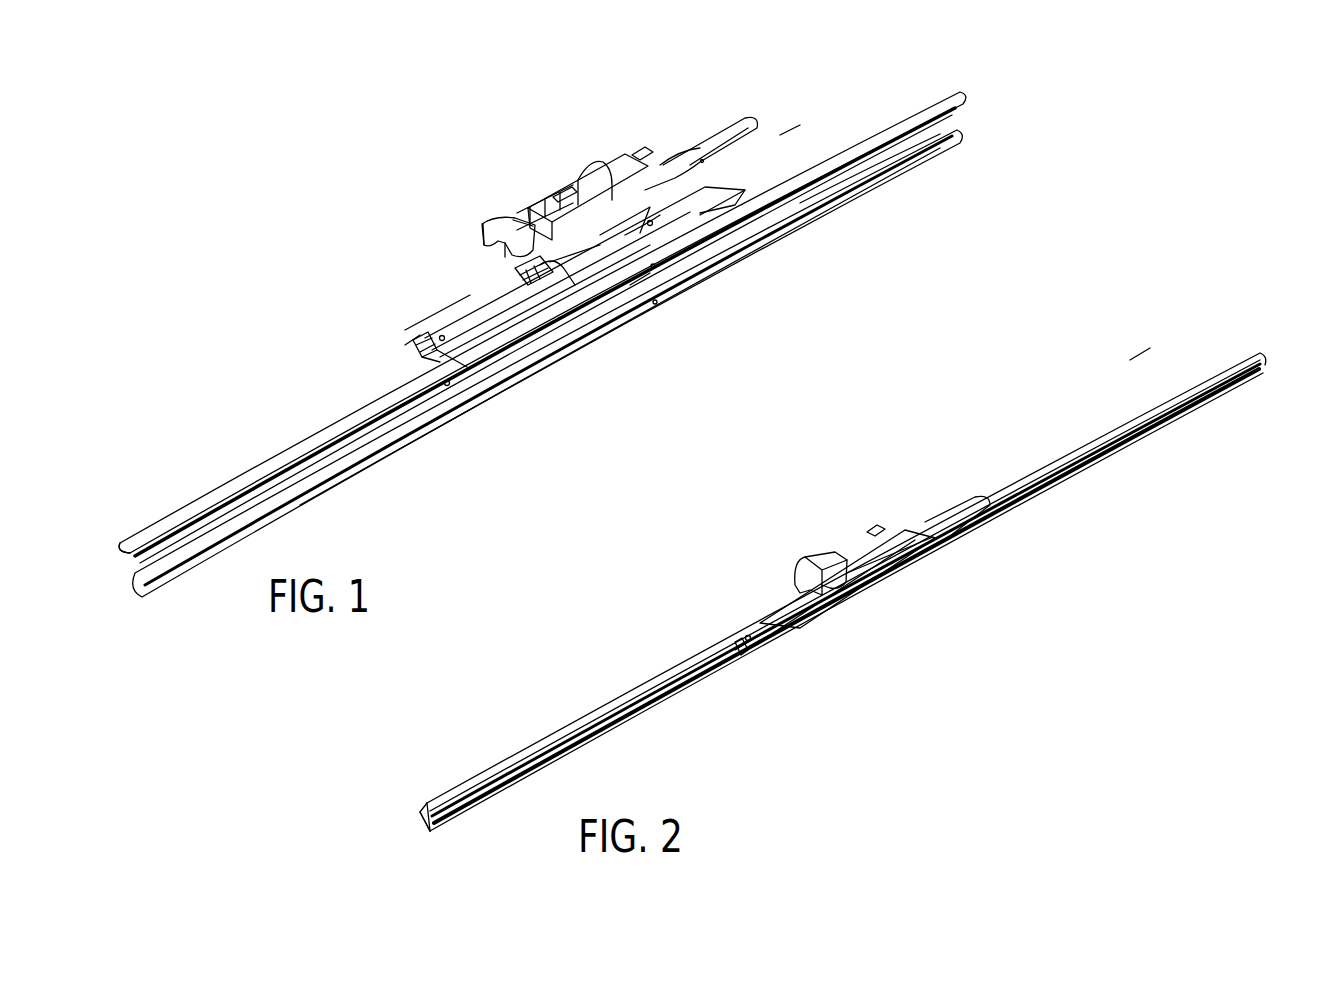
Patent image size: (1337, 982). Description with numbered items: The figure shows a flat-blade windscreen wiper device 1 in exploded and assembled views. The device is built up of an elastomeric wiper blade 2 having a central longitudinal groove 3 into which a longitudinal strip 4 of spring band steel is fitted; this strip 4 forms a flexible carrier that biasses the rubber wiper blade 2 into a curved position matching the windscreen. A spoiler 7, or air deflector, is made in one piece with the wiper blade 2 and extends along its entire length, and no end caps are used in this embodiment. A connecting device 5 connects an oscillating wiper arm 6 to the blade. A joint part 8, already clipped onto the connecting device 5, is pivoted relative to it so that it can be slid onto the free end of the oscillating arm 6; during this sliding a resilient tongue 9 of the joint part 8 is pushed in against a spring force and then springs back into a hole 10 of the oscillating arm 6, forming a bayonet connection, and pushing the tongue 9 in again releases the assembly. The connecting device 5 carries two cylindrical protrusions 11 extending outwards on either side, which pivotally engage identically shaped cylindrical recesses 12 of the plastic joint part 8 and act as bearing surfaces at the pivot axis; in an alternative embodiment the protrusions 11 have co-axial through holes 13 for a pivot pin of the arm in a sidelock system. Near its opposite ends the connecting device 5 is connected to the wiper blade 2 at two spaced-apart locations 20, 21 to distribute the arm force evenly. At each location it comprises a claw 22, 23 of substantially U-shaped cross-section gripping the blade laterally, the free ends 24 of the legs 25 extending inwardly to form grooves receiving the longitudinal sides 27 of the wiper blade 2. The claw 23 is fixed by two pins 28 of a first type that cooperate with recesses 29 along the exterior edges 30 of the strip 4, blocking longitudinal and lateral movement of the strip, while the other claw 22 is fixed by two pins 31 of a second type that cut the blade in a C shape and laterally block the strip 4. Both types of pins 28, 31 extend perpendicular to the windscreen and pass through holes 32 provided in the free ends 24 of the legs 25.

In FIG. 1, the windscreen wiper device 1 is at (810, 112).
In FIG. 2, the windscreen wiper device 1 is at (1155, 325).
In FIG. 1, the wiper blade 2 is at (327, 462).
In FIG. 2, the wiper blade 2 is at (590, 738).
In FIG. 1, the longitudinal groove 3 is at (125, 552).
In FIG. 1, the longitudinal strip 4 is at (480, 393).
In FIG. 2, the longitudinal strip 4 is at (412, 815).
In FIG. 1, the connecting device 5 is at (487, 302).
In FIG. 2, the connecting device 5 is at (773, 623).
In FIG. 1, the oscillating wiper arm 6 is at (730, 130).
In FIG. 2, the oscillating wiper arm 6 is at (972, 498).
In FIG. 1, the spoiler 7 is at (208, 497).
In FIG. 2, the spoiler 7 is at (495, 765).
In FIG. 1, the joint part 8 is at (500, 222).
In FIG. 2, the joint part 8 is at (813, 557).
In FIG. 1, the resilient tongue 9 is at (560, 188).
In FIG. 2, the resilient tongue 9 is at (878, 527).
In FIG. 1, the hole 10 is at (638, 147).
In FIG. 1, the cylindrical protrusions 11 is at (545, 272).
In FIG. 1, the cylindrical recesses 12 is at (620, 200).
In FIG. 1, the co-axial through holes 13 is at (545, 272).
In FIG. 1, the location 20 is at (390, 312).
In FIG. 2, the location 20 is at (713, 597).
In FIG. 1, the location 21 is at (655, 197).
In FIG. 1, the claw 22 is at (375, 347).
In FIG. 2, the claw 22 is at (790, 645).
In FIG. 1, the claw 23 is at (688, 216).
In FIG. 1, the free ends 24 is at (427, 357).
In FIG. 1, the legs 25 is at (443, 357).
In FIG. 2, the legs 25 is at (740, 640).
In FIG. 1, the longitudinal sides 27 is at (840, 140).
In FIG. 1, the pins of a first type 28 is at (640, 242).
In FIG. 1, the recesses 29 is at (655, 268).
In FIG. 1, the exterior edges 30 is at (820, 197).
In FIG. 1, the pins of a second type 31 is at (440, 353).
In FIG. 1, the holes 32 is at (650, 223).
In FIG. 2, the holes 32 is at (748, 637).